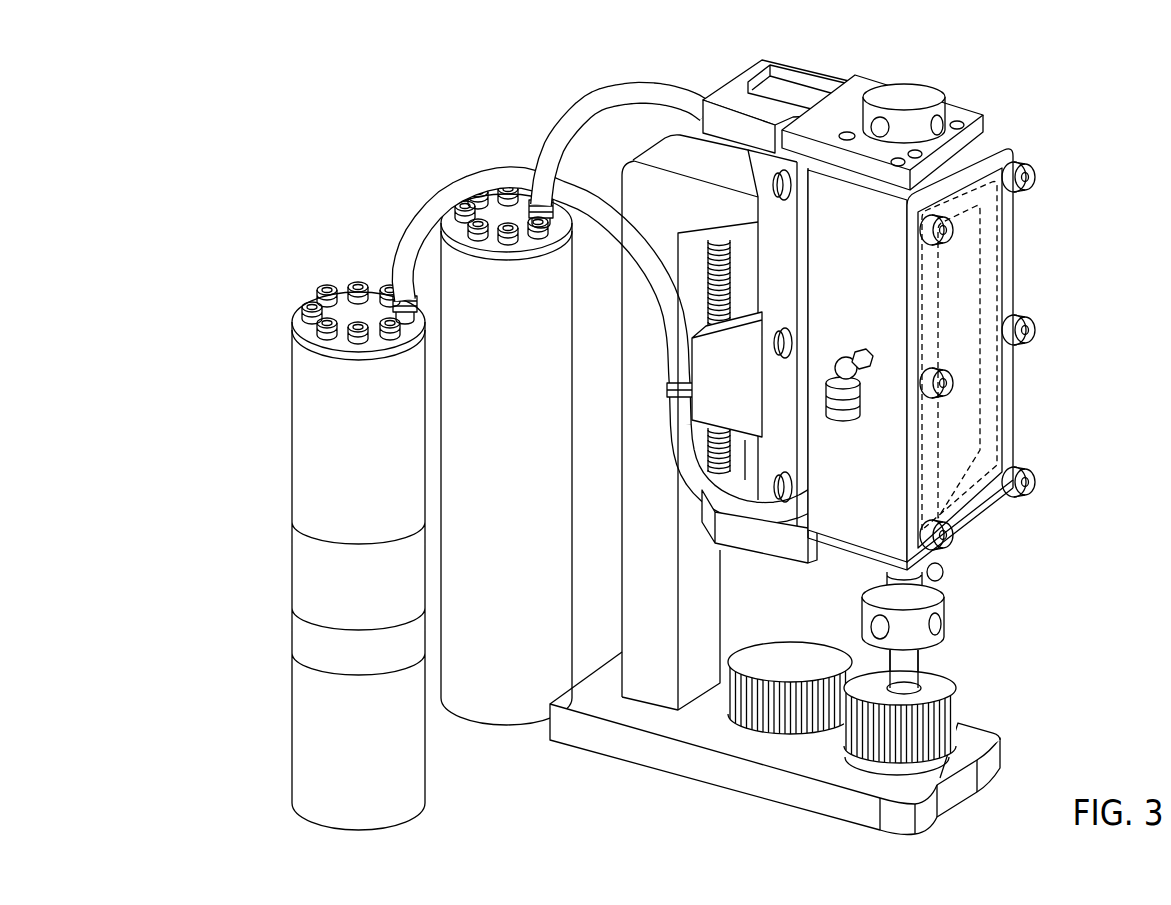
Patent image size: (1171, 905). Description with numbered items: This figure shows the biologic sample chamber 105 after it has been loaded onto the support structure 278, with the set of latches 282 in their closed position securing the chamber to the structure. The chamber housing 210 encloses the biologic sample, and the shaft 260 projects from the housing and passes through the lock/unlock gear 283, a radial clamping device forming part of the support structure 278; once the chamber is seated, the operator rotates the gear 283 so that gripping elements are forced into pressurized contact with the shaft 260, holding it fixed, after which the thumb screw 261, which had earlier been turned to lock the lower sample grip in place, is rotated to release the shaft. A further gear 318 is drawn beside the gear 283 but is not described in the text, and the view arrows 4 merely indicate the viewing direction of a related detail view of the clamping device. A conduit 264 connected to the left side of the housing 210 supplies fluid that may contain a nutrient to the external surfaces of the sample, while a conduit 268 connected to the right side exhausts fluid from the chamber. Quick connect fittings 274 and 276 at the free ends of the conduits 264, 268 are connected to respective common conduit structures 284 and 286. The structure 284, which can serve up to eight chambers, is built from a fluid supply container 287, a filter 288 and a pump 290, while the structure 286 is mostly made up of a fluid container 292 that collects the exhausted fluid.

The biologic sample chamber 105 is at (818, 448).
The chamber housing 210 is at (870, 268).
The shaft 260 is at (925, 648).
The thumb screw 261 is at (945, 566).
The conduit 264 is at (412, 255).
The conduit 268 is at (578, 124).
The quick connect fitting 274 is at (395, 300).
The quick connect fitting 276 is at (536, 204).
The support structure 278 is at (630, 152).
The latches 282 is at (812, 72).
The lock/unlock gear 283 is at (923, 693).
The common conduit structure 284 is at (303, 527).
The common conduit structure 286 is at (517, 738).
The fluid supply container 287 is at (292, 753).
The filter 288 is at (292, 632).
The pump 290 is at (294, 545).
The fluid container 292 is at (506, 440).
The drive gear 318 is at (787, 658).
The section line for FIG. 4 is at (983, 690).